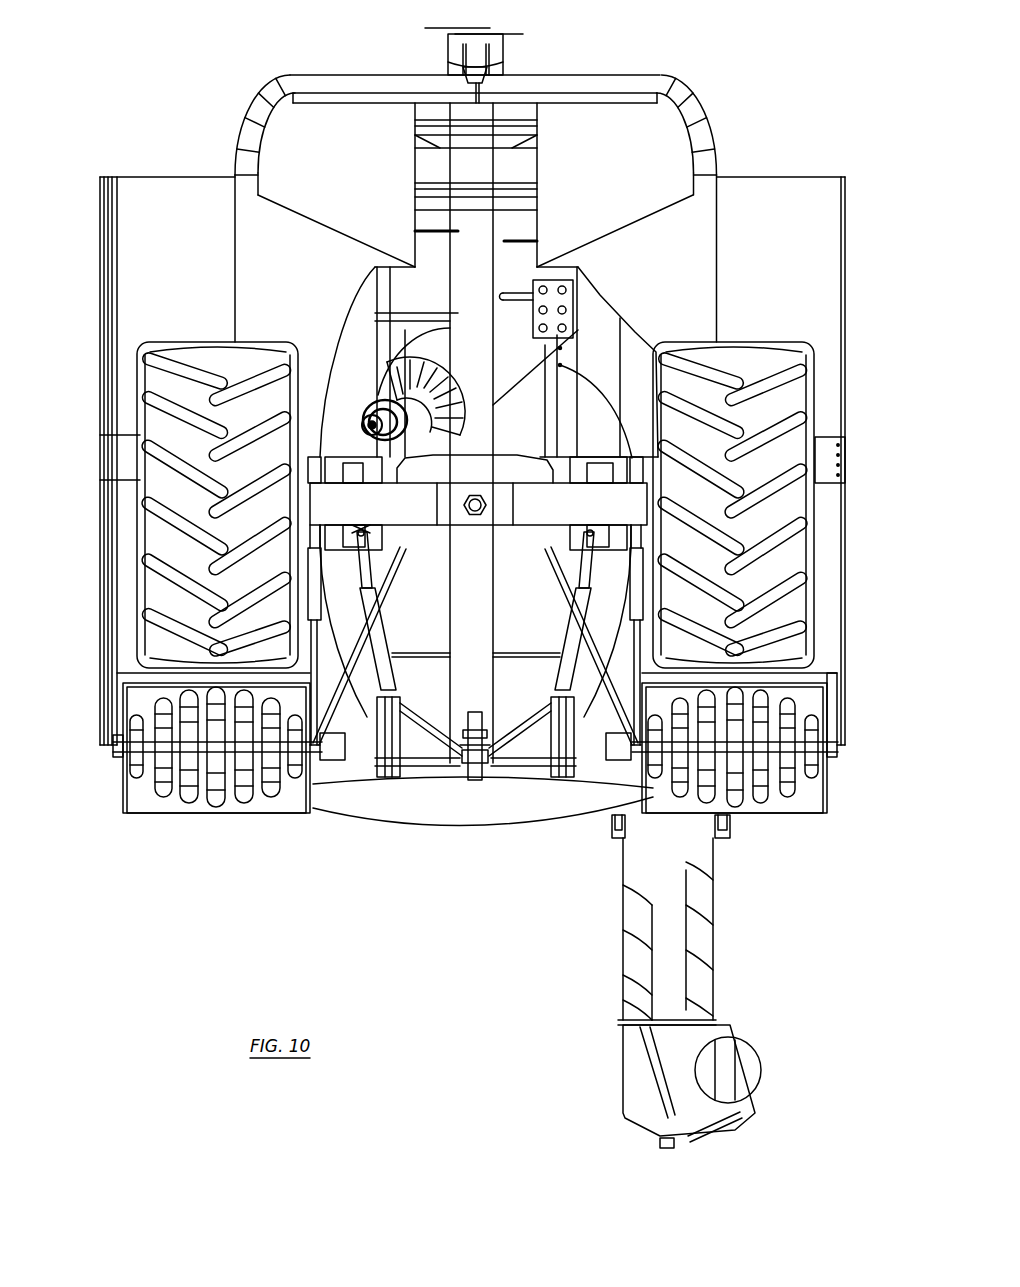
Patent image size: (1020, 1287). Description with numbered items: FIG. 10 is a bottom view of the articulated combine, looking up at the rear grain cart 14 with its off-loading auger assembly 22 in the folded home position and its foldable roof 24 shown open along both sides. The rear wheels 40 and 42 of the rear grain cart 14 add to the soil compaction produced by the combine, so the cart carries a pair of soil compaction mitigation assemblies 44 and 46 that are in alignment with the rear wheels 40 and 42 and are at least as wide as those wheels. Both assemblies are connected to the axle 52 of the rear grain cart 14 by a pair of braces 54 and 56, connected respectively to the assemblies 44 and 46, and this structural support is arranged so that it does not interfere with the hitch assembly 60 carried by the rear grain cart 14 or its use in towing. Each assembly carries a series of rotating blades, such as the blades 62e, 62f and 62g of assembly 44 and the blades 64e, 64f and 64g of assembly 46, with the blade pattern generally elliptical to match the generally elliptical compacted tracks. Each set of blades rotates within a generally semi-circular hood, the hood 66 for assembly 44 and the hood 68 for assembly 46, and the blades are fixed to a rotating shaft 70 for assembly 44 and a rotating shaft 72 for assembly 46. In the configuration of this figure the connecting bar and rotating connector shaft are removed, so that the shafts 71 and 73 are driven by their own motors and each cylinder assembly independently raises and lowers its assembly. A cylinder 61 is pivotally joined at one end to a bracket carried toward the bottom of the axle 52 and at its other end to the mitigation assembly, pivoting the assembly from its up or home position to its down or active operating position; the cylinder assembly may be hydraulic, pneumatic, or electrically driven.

The rear grain cart 14 is at (145, 108).
The off-loading auger assembly 22 is at (628, 971).
The foldable roof 24 is at (186, 190).
The rear wheel 40 is at (755, 348).
The rear wheel 42 is at (215, 345).
The soil compaction mitigation assembly 44 is at (838, 768).
The soil compaction mitigation assembly 46 is at (110, 757).
The axle 52 is at (530, 513).
The brace 54 is at (593, 648).
The brace 56 is at (360, 645).
The hitch assembly 60 is at (480, 782).
The cylinder 61 is at (318, 578).
The rotating blade 62e is at (710, 804).
The rotating blade 62f is at (683, 798).
The rotating blade 62g is at (656, 780).
The rotating blade 64e is at (188, 804).
The rotating blade 64f is at (160, 798).
The rotating blade 64g is at (140, 779).
The semi-circular hood 66 is at (827, 794).
The semi-circular hood 68 is at (123, 787).
The rotating shaft 70 is at (648, 822).
The shaft 71 is at (630, 760).
The rotating shaft 72 is at (148, 750).
The shaft 73 is at (330, 760).